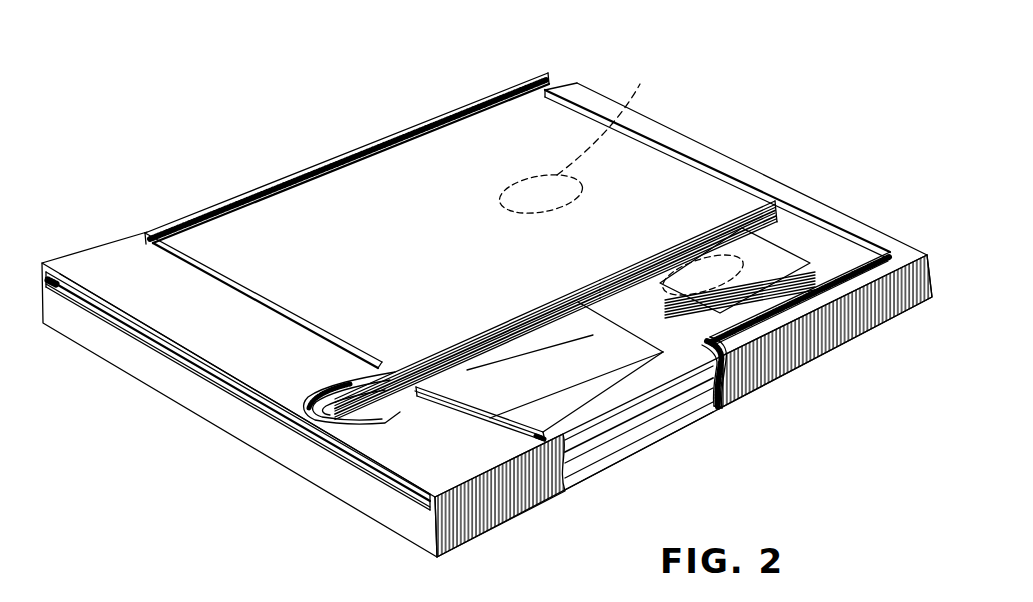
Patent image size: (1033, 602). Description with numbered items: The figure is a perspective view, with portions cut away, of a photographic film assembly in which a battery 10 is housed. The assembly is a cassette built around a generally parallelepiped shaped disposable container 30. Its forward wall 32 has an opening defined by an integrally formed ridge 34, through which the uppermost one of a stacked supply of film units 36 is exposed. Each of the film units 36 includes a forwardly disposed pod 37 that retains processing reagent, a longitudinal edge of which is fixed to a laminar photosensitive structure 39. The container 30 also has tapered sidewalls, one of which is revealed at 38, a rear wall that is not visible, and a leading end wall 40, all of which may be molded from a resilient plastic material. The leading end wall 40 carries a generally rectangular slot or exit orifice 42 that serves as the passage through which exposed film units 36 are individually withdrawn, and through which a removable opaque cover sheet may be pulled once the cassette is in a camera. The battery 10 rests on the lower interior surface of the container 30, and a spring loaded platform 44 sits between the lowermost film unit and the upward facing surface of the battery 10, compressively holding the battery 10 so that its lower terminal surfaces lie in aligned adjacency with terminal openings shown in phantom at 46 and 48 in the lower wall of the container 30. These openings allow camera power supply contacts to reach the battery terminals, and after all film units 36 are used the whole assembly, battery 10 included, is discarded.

The battery 10 is at (642, 448).
The container 30 is at (535, 220).
The forward wall 32 is at (107, 252).
The ridge 34 is at (250, 192).
The film units 36 is at (734, 210).
The pod 37 is at (315, 423).
The tapered sidewall 38 is at (482, 512).
The laminar photosensitive structure 39 is at (433, 358).
The leading end wall 40 is at (378, 507).
The exit orifice 42 is at (190, 362).
The spring loaded platform 44 is at (668, 338).
The terminal opening 46 is at (808, 207).
The terminal opening 48 is at (578, 136).